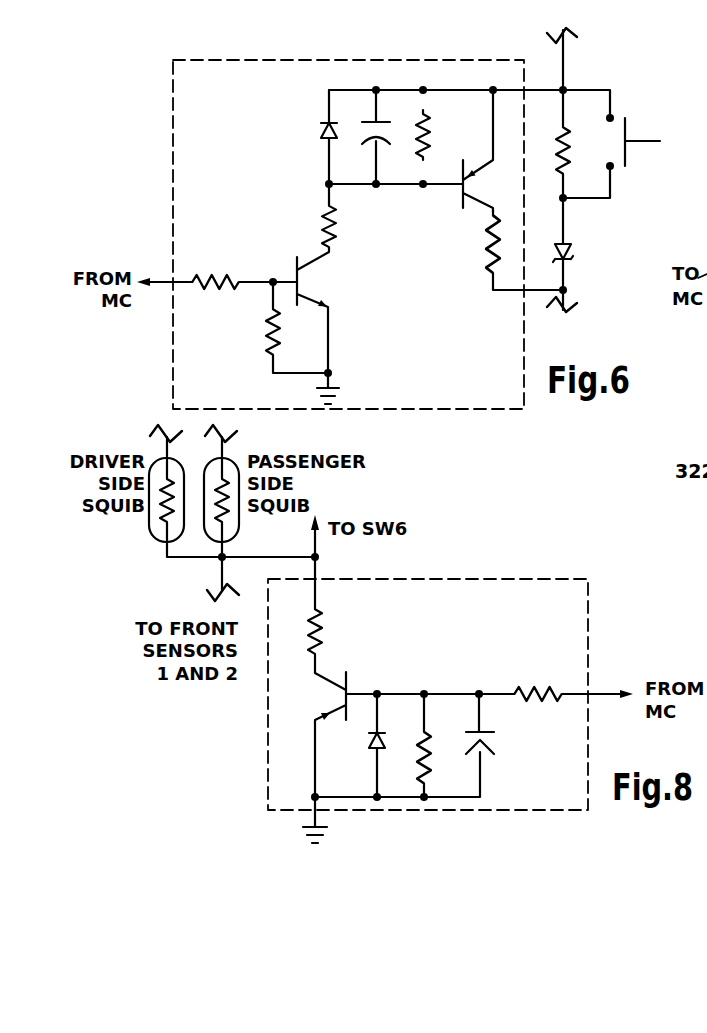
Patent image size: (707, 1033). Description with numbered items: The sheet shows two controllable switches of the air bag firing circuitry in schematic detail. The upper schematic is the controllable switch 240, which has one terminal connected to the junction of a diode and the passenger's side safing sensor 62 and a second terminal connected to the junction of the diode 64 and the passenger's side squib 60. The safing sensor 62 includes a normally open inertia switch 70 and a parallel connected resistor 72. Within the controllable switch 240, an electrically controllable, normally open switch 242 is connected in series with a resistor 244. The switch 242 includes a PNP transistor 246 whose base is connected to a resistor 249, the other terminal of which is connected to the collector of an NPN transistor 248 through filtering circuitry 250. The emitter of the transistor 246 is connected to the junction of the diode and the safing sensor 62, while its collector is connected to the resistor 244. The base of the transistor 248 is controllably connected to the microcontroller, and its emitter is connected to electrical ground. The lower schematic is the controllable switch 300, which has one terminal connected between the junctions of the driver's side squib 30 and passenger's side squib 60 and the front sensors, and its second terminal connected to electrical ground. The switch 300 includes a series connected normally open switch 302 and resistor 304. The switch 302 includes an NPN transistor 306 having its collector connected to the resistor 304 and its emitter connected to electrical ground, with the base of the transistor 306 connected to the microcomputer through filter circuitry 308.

In FIG. 6, the controllable switch 240 is at (390, 60).
In FIG. 6, the normally open switch 242 is at (354, 73).
In FIG. 6, the resistor 244 is at (490, 265).
In FIG. 6, the PNP transistor 246 is at (483, 188).
In FIG. 6, the NPN transistor 248 is at (318, 282).
In FIG. 6, the resistor 249 is at (323, 231).
In FIG. 6, the filtering circuitry 250 is at (298, 132).
In FIG. 6, the resistor 72 is at (566, 145).
In FIG. 6, the normally open inertia switch 70 is at (633, 124).
In FIG. 6, the passenger's side safing sensor 62 is at (626, 181).
In FIG. 6, the diode 64 is at (573, 252).
In FIG. 8, the driver's side squib 30 is at (153, 537).
In FIG. 8, the passenger's side squib 60 is at (210, 537).
In FIG. 8, the controllable switch 300 is at (500, 578).
In FIG. 8, the normally open switch 302 is at (510, 754).
In FIG. 8, the resistor 304 is at (325, 632).
In FIG. 8, the NPN transistor 306 is at (325, 694).
In FIG. 8, the filter circuitry 308 is at (461, 820).